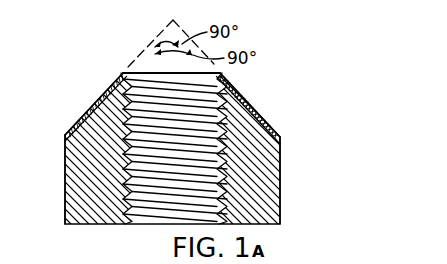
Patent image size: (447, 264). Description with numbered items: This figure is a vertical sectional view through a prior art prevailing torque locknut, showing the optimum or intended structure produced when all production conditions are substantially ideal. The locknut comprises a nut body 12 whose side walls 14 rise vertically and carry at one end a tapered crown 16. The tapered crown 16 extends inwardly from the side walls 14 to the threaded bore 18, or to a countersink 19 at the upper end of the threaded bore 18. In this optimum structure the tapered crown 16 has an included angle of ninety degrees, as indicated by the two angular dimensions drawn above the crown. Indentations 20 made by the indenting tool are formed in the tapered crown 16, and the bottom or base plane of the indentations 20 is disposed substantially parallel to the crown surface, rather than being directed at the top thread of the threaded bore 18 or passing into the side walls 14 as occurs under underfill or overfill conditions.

The nut body 12 is at (272, 184).
The side walls 14 is at (65, 201).
The tapered crown 16 is at (239, 95).
The threaded bore 18 is at (142, 200).
The countersink 19 is at (212, 69).
The indentations 20 is at (89, 108).